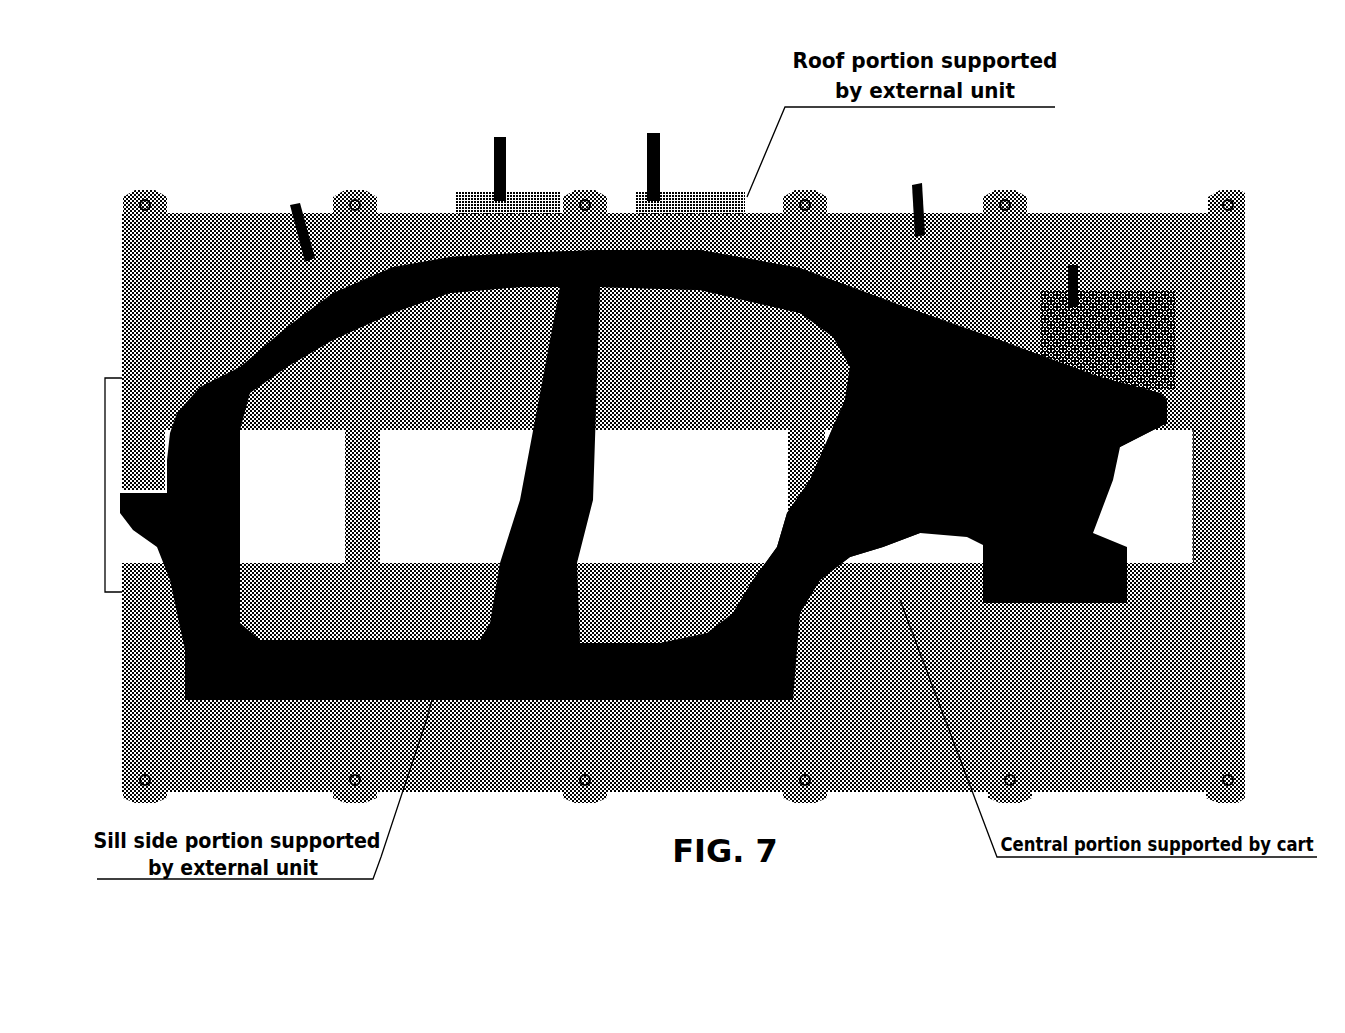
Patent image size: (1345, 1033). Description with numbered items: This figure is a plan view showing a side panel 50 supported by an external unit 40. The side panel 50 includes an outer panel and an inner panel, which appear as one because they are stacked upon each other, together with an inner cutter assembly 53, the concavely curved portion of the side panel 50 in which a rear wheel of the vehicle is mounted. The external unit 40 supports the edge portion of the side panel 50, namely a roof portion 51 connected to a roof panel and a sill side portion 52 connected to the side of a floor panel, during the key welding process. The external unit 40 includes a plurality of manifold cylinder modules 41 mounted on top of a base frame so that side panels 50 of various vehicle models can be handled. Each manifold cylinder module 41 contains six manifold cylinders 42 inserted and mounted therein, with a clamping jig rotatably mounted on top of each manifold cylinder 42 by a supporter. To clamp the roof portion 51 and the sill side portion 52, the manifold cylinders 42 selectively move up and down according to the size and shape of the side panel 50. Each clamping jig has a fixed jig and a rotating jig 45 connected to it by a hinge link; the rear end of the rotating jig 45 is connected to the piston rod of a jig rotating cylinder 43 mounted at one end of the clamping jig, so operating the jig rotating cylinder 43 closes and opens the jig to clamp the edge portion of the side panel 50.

The external unit 40 is at (1050, 195).
The manifold cylinder module 41 is at (1147, 268).
The manifold cylinder 42 is at (1162, 360).
The jig rotating cylinder 43 is at (1074, 268).
The rotating jig 45 is at (1128, 440).
The side panel 50 is at (399, 266).
The roof portion 51 is at (607, 247).
The sill side portion 52 is at (567, 707).
The inner cutter assembly 53 is at (868, 545).